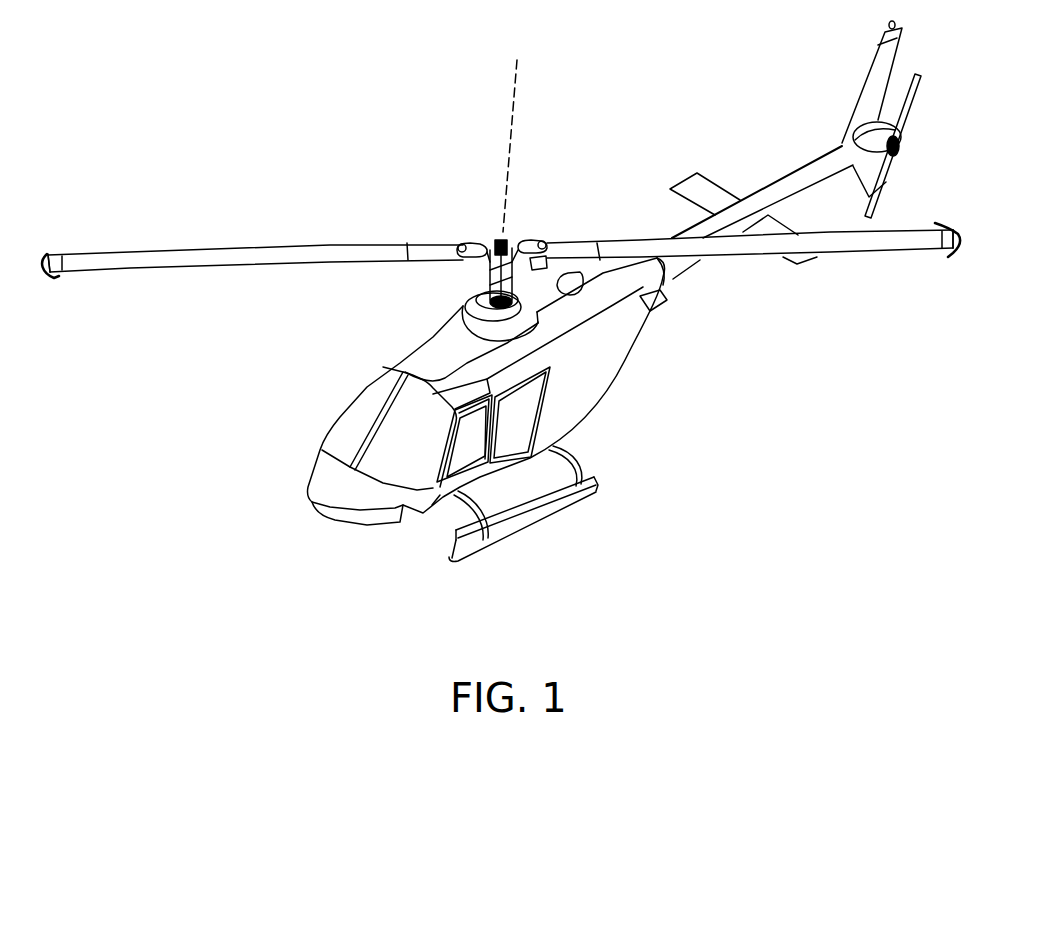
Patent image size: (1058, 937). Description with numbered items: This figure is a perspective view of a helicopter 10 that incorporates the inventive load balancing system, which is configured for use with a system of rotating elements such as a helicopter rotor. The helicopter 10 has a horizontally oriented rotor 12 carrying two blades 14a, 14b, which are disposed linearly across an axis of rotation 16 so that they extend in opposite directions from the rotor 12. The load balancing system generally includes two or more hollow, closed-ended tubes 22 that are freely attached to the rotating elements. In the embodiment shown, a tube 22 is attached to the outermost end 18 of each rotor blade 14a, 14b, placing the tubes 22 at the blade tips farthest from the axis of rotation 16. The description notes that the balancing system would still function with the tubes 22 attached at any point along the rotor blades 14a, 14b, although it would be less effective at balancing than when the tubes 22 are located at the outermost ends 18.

The helicopter 10 is at (601, 525).
The rotor 12 is at (458, 216).
The blade 14a is at (740, 262).
The blade 14b is at (207, 270).
The axis of rotation 16 is at (516, 96).
The outermost end 18 is at (66, 255).
The tube 22 is at (66, 281).